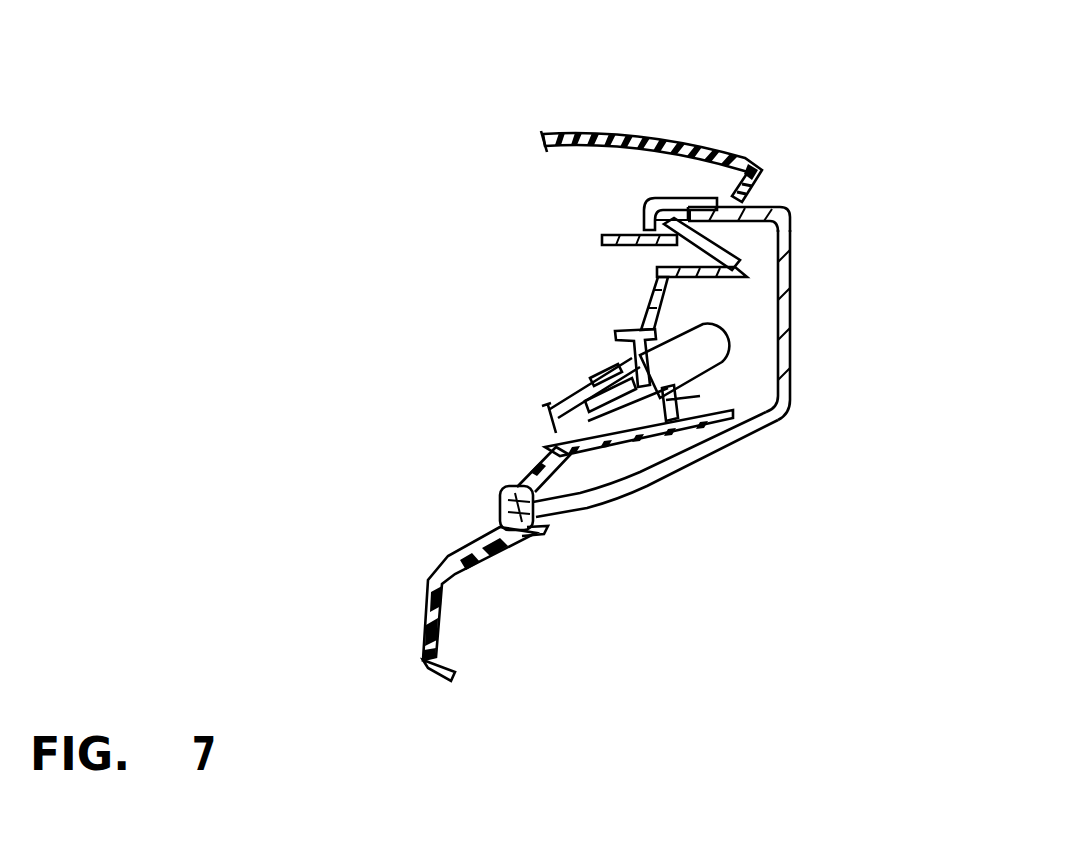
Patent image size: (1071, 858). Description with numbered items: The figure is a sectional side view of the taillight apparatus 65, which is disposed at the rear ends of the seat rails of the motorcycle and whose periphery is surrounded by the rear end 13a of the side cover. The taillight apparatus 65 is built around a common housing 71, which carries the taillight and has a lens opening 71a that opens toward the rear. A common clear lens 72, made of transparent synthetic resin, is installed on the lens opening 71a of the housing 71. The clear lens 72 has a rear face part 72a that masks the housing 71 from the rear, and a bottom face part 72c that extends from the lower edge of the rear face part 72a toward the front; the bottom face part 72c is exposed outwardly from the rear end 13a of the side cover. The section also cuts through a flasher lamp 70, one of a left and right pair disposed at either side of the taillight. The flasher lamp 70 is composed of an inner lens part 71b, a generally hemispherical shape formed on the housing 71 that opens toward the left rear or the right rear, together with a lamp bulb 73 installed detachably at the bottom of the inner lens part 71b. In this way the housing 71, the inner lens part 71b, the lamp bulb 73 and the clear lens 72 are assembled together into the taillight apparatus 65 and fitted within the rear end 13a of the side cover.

The rear end of the side cover 13a is at (703, 146).
The taillight apparatus 65 is at (680, 382).
The flasher lamp 70 is at (678, 444).
The housing 71 is at (653, 235).
The lens opening 71a is at (718, 205).
The inner lens part 71b is at (640, 302).
The clear lens 72 is at (795, 296).
The rear face part 72a is at (790, 252).
The bottom face part 72c is at (683, 467).
The lamp bulb 73 is at (727, 362).